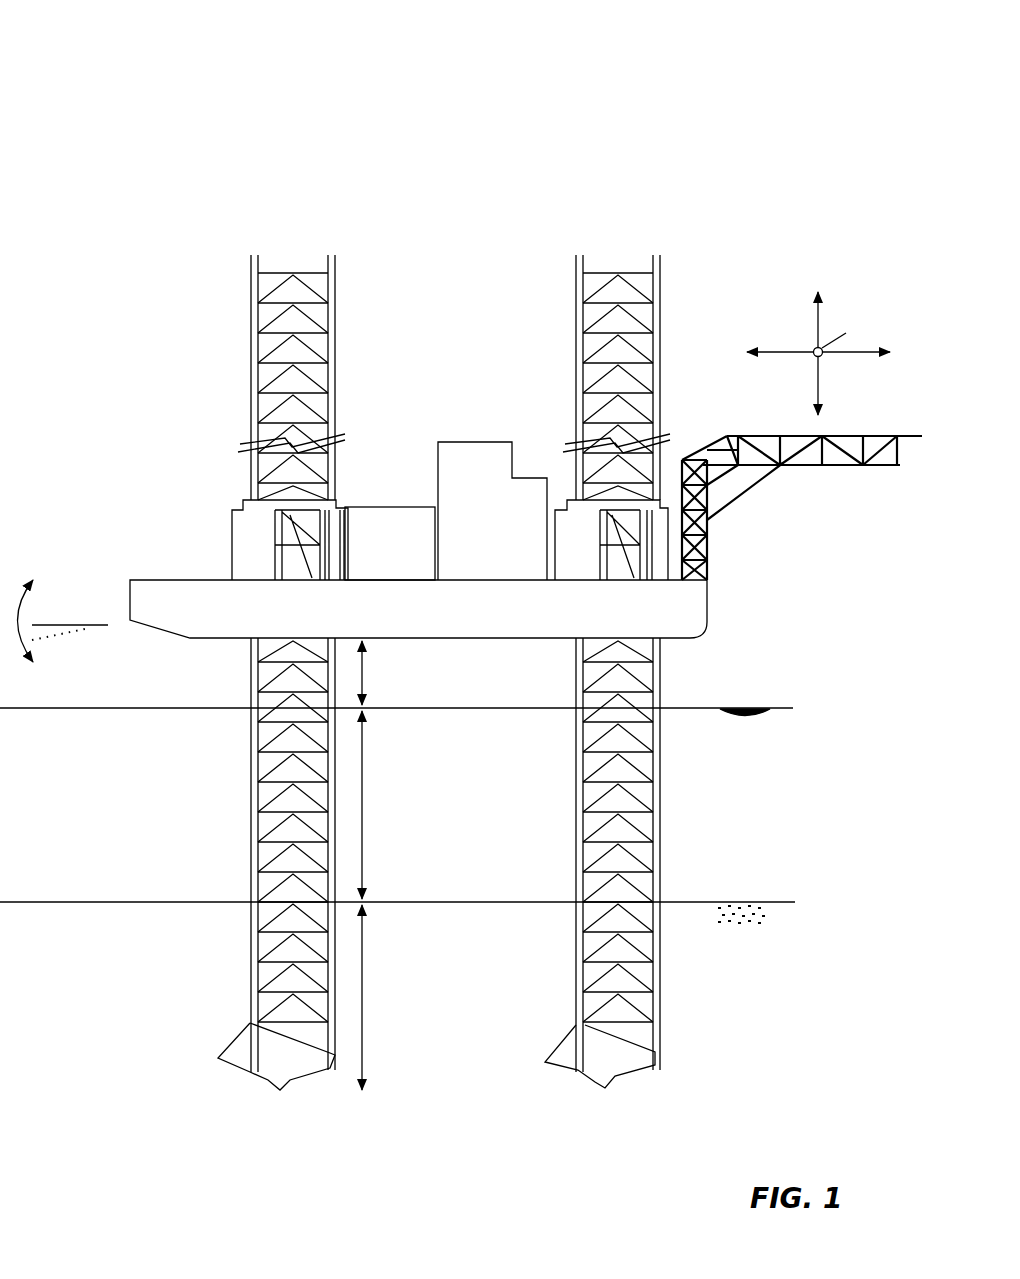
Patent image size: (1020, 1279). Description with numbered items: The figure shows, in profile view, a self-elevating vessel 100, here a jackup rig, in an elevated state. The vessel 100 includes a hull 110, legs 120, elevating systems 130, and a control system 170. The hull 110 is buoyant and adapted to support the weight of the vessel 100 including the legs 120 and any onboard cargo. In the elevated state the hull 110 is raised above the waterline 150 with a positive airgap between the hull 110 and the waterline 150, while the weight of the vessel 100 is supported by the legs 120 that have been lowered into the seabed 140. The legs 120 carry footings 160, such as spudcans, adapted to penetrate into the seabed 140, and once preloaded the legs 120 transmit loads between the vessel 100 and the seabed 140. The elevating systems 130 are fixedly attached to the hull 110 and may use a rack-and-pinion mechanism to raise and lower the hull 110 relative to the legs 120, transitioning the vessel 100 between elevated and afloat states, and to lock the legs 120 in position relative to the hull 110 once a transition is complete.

The self-elevating vessel 100 is at (70, 65).
The hull 110 is at (184, 576).
The legs 120 is at (244, 819).
The elevating systems 130 is at (244, 498).
The seabed 140 is at (744, 899).
The waterline 150 is at (734, 705).
The footings 160 is at (248, 1080).
The control system 170 is at (392, 504).